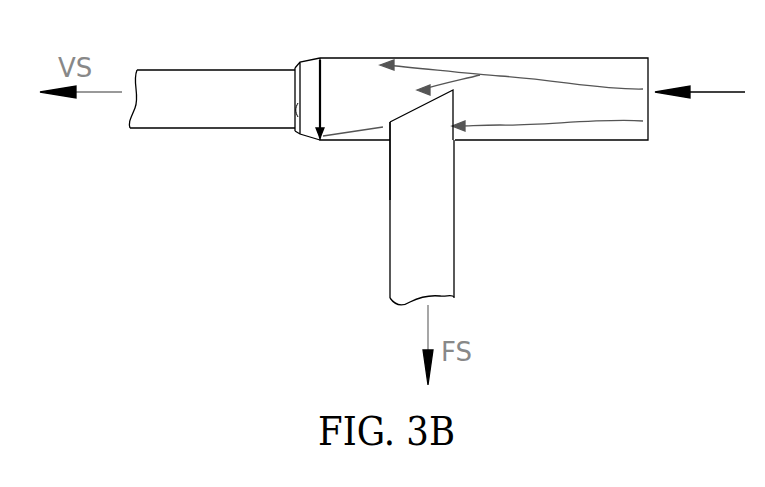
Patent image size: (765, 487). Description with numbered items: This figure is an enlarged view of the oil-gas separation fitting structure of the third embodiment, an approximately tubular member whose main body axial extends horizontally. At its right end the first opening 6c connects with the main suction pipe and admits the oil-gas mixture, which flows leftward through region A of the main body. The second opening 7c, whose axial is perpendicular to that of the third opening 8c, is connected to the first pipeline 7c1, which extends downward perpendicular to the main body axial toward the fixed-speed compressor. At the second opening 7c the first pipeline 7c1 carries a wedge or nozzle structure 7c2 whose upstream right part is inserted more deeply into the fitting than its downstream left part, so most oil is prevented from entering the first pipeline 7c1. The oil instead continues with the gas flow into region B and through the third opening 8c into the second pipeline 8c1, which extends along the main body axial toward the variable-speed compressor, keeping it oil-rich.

The first opening 6c is at (653, 123).
The second opening 7c is at (452, 150).
The first pipeline 7c1 is at (402, 143).
The wedge or nozzle structure 7c2 is at (436, 103).
The third opening 8c is at (288, 82).
The second pipeline 8c1 is at (257, 95).
The inlet flow A is at (558, 75).
The chamber B is at (342, 95).